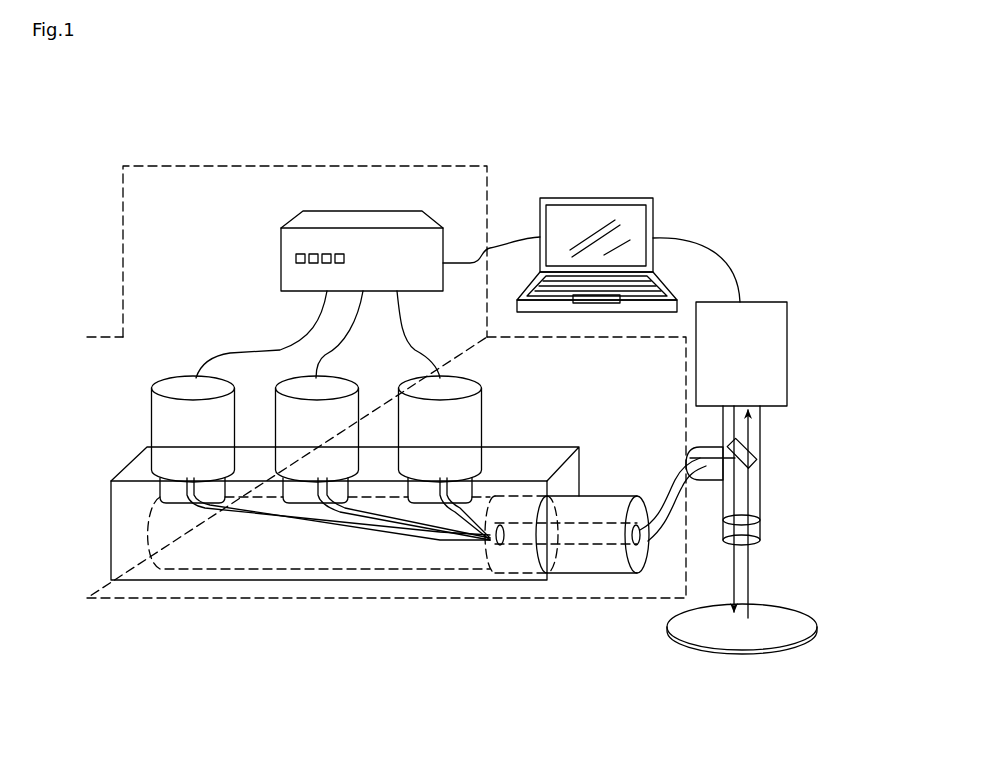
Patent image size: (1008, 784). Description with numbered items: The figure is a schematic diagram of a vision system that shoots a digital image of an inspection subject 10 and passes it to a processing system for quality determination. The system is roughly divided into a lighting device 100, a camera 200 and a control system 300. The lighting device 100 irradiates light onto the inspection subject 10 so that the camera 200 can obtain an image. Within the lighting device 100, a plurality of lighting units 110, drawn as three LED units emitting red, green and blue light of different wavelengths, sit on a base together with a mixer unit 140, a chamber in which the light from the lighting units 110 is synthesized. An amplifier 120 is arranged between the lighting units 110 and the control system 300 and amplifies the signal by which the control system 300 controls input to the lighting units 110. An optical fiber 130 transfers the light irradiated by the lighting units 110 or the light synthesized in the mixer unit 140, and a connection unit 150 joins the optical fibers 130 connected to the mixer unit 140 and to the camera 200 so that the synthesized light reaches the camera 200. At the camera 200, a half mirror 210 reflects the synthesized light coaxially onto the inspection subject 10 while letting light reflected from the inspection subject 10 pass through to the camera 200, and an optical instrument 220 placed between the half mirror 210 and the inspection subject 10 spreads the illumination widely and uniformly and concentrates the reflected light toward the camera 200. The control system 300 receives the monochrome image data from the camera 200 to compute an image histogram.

The inspection subject 10 is at (760, 645).
The lighting device 100 is at (215, 608).
The lighting units 110 is at (165, 383).
The amplifier 120 is at (281, 243).
The optical fiber 130 is at (665, 478).
The mixer unit 140 is at (505, 563).
The connection unit 150 is at (592, 565).
The camera 200 is at (806, 345).
The half mirror 210 is at (752, 455).
The optical instrument 220 is at (760, 522).
The control system 300 is at (630, 190).